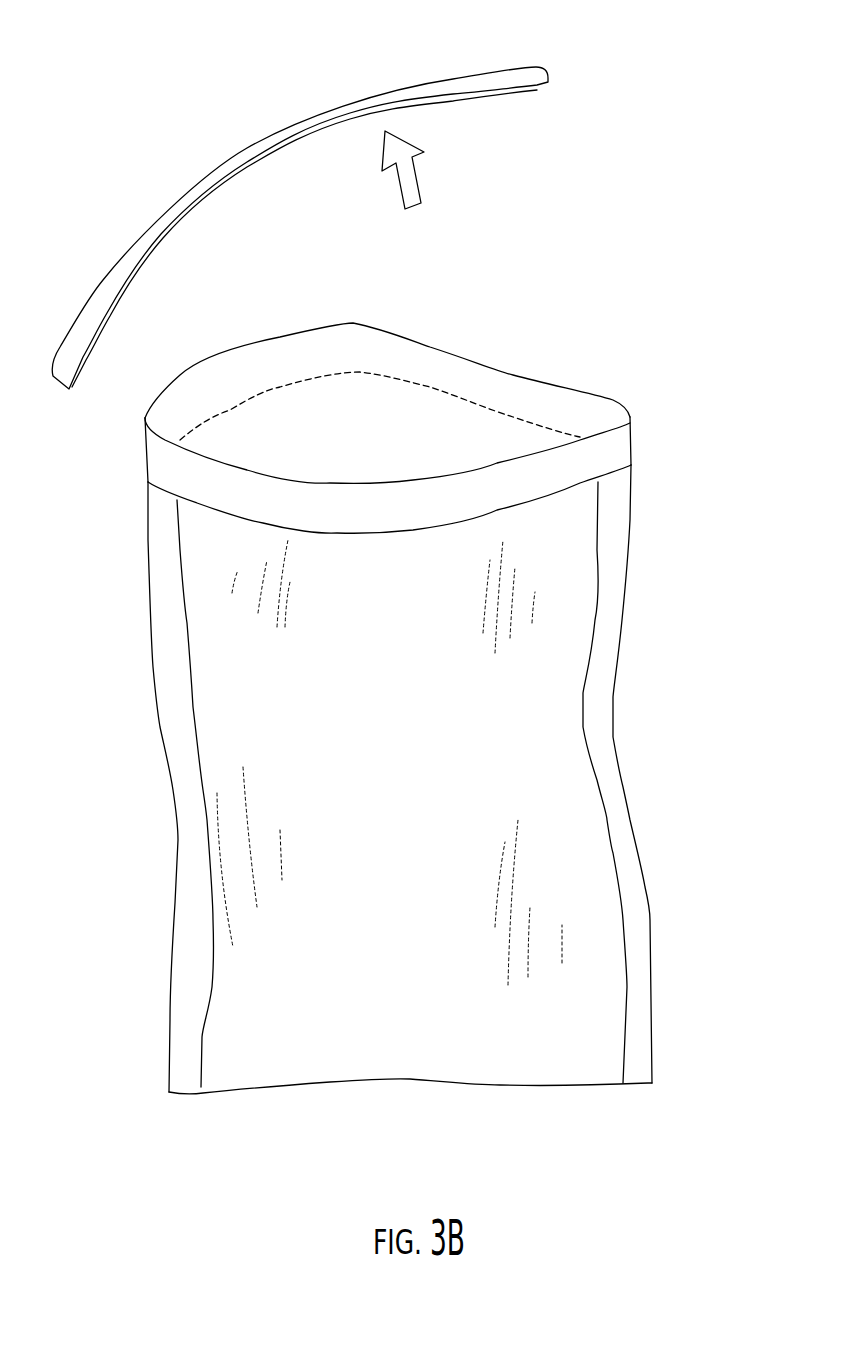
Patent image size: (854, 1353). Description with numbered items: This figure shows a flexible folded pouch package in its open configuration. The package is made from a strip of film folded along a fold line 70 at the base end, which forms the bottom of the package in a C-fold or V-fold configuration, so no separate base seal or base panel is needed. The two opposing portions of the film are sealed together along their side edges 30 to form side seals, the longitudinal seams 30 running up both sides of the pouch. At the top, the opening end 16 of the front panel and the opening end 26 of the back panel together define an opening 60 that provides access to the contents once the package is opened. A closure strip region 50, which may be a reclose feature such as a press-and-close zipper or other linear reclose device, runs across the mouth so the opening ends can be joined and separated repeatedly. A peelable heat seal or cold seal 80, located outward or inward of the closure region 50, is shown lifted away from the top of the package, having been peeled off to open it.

The peelable heat seal or cold seal 80 is at (510, 77).
The opening end of the back panel 26 is at (286, 361).
The opening end of the front panel 16 is at (235, 482).
The opening 60 is at (408, 434).
The closure strip region 50 is at (648, 402).
The longitudinal seams 30 is at (172, 677).
The fold line 70 is at (412, 1083).